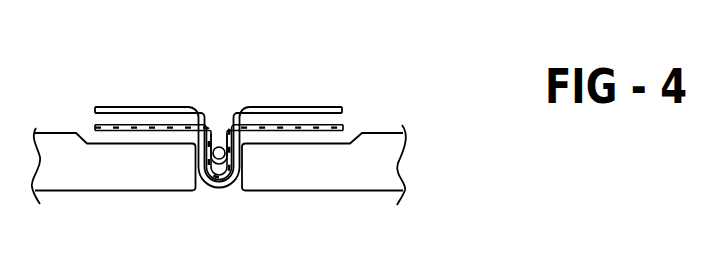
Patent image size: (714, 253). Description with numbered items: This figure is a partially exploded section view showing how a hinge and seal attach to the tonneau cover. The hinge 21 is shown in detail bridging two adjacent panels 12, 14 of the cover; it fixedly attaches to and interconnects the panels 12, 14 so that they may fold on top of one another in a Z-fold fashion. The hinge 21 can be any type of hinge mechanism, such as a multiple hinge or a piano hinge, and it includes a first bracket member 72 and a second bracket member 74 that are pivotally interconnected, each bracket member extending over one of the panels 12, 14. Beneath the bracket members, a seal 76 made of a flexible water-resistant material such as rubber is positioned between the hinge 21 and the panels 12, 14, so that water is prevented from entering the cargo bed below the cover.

The panel 12 is at (87, 172).
The panel 14 is at (297, 175).
The hinge 21 is at (225, 103).
The first bracket member 72 is at (145, 107).
The second bracket member 74 is at (293, 107).
The seal 76 is at (348, 127).